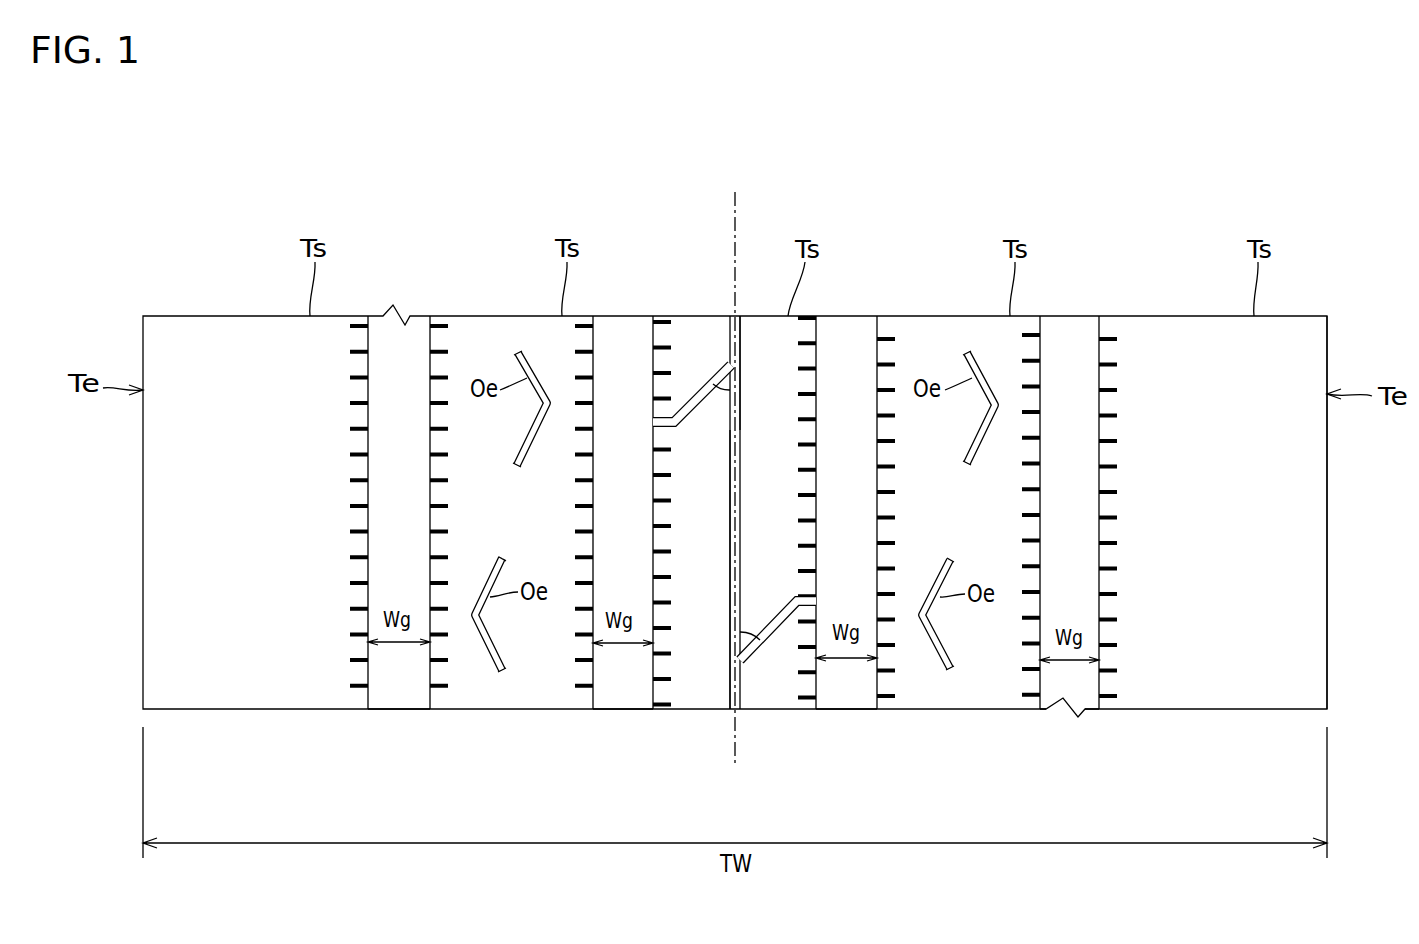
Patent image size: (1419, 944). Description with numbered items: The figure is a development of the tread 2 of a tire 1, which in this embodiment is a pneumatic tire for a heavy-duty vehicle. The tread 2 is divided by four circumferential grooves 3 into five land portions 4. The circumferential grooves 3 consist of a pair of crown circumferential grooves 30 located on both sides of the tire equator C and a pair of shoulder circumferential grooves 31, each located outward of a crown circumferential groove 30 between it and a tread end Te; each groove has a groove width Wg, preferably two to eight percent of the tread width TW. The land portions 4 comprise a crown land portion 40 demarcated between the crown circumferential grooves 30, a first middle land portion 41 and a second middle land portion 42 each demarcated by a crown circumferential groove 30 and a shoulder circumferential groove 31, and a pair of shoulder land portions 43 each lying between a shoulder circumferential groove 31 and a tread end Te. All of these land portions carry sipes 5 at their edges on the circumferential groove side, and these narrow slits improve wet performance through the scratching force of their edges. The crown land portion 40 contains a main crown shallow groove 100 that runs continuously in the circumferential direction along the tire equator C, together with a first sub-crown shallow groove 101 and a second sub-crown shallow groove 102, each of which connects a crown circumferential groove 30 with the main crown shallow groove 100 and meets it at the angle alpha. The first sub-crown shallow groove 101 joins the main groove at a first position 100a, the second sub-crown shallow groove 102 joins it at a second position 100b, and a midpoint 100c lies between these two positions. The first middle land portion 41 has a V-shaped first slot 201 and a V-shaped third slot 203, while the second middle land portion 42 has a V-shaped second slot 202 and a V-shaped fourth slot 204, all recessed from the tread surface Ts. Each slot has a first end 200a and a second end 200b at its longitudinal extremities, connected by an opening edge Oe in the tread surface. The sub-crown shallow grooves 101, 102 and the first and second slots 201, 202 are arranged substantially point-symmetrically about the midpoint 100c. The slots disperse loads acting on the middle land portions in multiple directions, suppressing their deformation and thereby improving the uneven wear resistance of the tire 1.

The tire 1 is at (1313, 248).
The tread 2 is at (1345, 300).
The circumferential grooves 3 is at (738, 761).
The crown circumferential grooves 30 is at (620, 712).
The shoulder circumferential grooves 31 is at (397, 712).
The land portions 4 is at (682, 467).
The crown land portion 40 is at (684, 316).
The first middle land portion 41 is at (460, 316).
The second middle land portion 42 is at (908, 316).
The shoulder land portions 43 is at (208, 316).
The sipes 5 is at (368, 378).
The main crown shallow groove 100 is at (737, 316).
The first position 100a is at (738, 362).
The second position 100b is at (730, 663).
The midpoint 100c is at (730, 515).
The first sub-crown shallow groove 101 is at (653, 422).
The second sub-crown shallow groove 102 is at (814, 602).
The first end 200a is at (517, 352).
The second end 200b is at (512, 466).
The first slot 201 is at (543, 377).
The second slot 202 is at (936, 650).
The third slot 203 is at (486, 653).
The fourth slot 204 is at (988, 378).